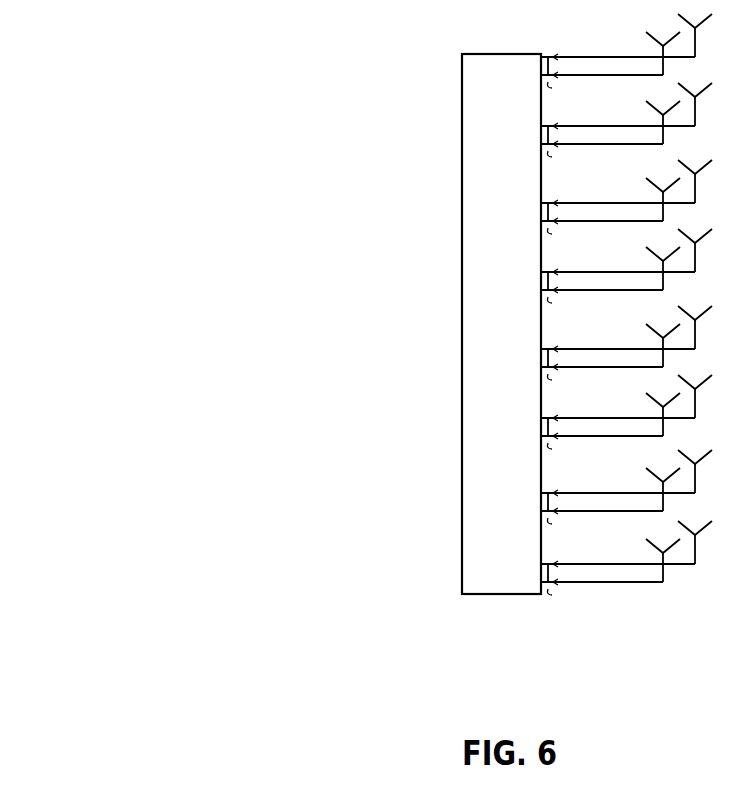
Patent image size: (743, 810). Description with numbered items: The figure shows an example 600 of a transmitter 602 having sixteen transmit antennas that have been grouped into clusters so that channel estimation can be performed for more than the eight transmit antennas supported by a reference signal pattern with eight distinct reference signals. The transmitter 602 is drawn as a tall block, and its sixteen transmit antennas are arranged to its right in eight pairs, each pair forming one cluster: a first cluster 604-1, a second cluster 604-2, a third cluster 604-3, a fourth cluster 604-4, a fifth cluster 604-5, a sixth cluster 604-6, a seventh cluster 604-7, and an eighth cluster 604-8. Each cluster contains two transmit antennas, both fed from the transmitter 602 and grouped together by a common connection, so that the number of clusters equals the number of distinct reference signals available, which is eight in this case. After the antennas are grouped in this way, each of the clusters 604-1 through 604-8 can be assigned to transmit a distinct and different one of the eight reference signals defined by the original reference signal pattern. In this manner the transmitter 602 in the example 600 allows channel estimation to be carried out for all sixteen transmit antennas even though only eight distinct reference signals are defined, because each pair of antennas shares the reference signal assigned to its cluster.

The example 600 is at (170, 680).
The transmitter 602 is at (501, 324).
The cluster 604-1 is at (552, 49).
The cluster 604-2 is at (552, 118).
The cluster 604-3 is at (552, 195).
The cluster 604-4 is at (552, 264).
The cluster 604-5 is at (552, 341).
The cluster 604-6 is at (552, 410).
The cluster 604-7 is at (552, 485).
The cluster 604-8 is at (552, 556).